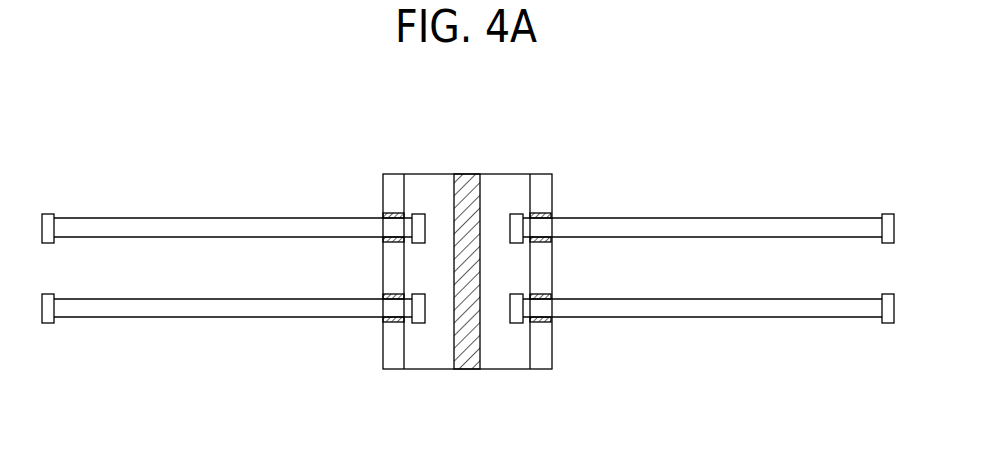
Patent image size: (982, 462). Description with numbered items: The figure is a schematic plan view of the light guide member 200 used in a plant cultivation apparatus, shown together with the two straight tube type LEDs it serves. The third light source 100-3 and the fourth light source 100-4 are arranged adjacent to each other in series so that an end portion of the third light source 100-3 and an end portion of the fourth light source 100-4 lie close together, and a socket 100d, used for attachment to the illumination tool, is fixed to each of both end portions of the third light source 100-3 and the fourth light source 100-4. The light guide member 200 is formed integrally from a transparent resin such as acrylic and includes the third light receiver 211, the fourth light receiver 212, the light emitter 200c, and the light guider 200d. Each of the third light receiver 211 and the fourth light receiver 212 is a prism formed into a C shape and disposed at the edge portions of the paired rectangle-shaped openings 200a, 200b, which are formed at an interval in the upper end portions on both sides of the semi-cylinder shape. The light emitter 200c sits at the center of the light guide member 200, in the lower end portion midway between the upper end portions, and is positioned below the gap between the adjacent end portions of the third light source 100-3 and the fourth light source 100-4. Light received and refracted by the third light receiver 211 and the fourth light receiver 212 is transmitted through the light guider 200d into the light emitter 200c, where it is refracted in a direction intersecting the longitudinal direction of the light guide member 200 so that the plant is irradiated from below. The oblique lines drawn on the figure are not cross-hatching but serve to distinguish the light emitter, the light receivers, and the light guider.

The third light source 100-3 is at (180, 230).
The fourth light source 100-4 is at (758, 228).
The socket 100d is at (47, 296).
The light guide member 200 is at (518, 174).
The rectangle-shaped opening 200a is at (393, 213).
The rectangle-shaped opening 200b is at (542, 213).
The light emitter 200c is at (470, 362).
The light guider 200d is at (493, 180).
The third light receiver 211 is at (397, 242).
The fourth light receiver 212 is at (540, 242).